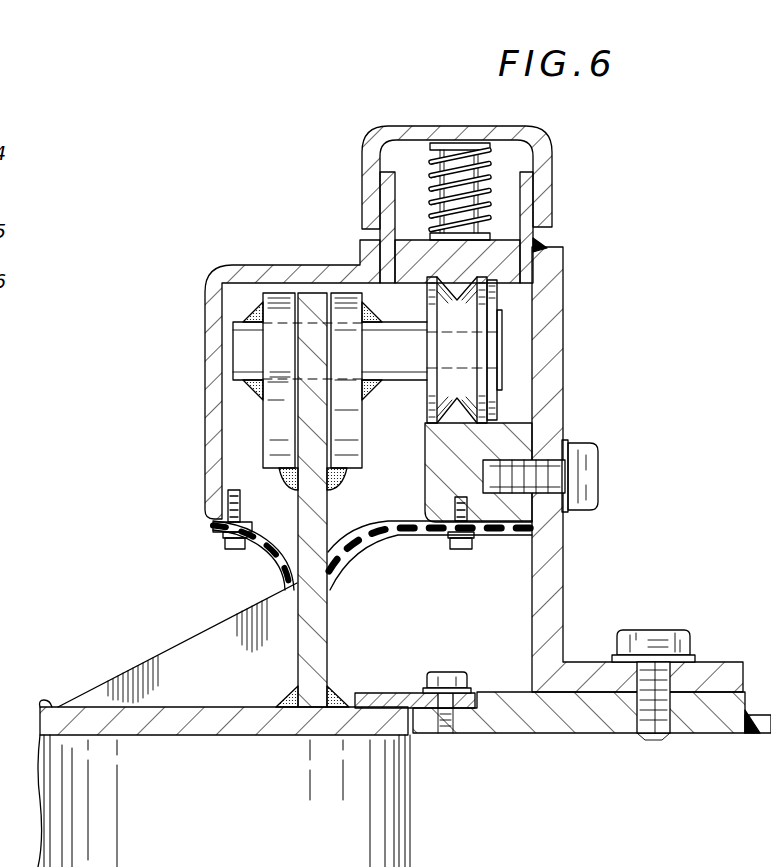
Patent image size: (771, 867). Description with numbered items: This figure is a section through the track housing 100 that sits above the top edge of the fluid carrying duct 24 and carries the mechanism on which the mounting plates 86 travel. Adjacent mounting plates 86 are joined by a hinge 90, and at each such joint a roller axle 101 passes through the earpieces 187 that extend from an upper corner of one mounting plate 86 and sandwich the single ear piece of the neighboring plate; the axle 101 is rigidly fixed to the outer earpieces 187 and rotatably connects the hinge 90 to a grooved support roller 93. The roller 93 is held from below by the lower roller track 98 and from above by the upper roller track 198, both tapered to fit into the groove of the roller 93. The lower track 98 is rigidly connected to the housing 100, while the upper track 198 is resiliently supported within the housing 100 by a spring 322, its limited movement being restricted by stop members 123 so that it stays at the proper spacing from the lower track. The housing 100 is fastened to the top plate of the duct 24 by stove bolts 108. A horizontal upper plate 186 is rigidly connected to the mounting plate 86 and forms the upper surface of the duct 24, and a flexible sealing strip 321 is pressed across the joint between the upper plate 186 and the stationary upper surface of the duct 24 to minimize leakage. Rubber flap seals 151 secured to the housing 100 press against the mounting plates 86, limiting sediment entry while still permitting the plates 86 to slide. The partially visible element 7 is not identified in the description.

The spring 322 is at (418, 152).
The stop member 123 is at (490, 150).
The upper roller track 198 is at (497, 238).
The track housing 100 is at (569, 196).
The mounting plate 86 is at (328, 512).
The earpieces 187 is at (262, 402).
The roller axle 101 is at (416, 328).
The hinge 90 is at (395, 388).
The support roller 93 is at (483, 296).
The lower roller track 98 is at (517, 436).
The rubber flap seal 151 is at (287, 560).
The horizontal upper plate 186 is at (47, 709).
The flexible sealing strip 321 is at (385, 693).
The fluid carrying duct 24 is at (503, 692).
The stove bolt 108 is at (687, 637).
The pipe 7 is at (42, 760).